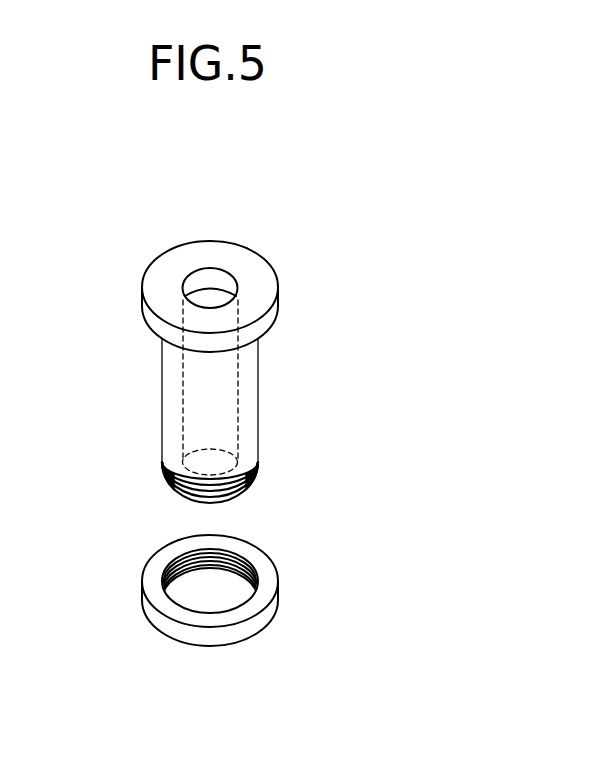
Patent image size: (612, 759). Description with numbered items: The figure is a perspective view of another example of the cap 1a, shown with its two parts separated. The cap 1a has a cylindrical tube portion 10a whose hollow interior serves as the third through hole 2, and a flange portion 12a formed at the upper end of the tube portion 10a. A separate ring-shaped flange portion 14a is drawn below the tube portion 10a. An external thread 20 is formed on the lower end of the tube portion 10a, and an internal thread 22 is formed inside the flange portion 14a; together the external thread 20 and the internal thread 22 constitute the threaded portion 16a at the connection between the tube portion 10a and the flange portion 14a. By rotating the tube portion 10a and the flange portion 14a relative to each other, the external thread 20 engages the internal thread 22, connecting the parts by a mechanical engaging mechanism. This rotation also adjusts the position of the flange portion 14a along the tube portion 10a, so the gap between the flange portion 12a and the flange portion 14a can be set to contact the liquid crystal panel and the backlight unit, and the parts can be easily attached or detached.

The cap 1a is at (184, 203).
The third through hole 2 is at (212, 295).
The tube portion 10a is at (252, 368).
The flange portion 12a is at (230, 258).
The flange portion 14a is at (166, 632).
The threaded portion 16a is at (348, 467).
The external thread 20 is at (276, 477).
The internal thread 22 is at (253, 573).